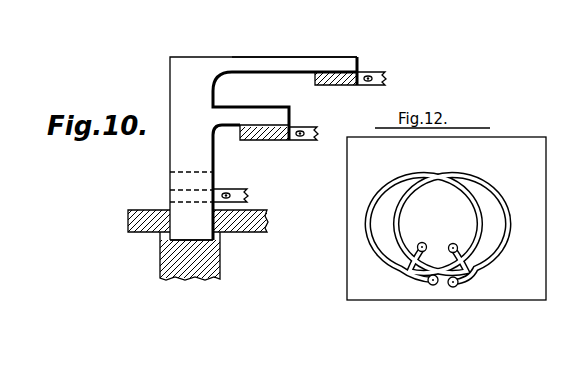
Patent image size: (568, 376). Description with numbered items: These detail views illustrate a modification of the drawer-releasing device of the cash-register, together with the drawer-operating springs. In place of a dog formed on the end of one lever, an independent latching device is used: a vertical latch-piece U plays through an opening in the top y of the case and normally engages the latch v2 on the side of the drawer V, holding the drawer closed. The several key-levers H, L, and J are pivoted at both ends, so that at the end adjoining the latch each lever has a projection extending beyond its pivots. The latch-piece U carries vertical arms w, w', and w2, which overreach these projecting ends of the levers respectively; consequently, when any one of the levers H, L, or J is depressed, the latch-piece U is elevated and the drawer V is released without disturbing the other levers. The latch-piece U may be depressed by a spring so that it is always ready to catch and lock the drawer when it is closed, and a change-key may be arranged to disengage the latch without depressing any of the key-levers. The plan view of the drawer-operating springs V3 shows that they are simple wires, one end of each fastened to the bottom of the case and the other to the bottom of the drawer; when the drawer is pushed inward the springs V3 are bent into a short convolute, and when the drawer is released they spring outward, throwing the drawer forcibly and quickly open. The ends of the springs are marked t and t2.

In FIG. 10, the vertical latch-piece U is at (200, 77).
In FIG. 10, the vertical arm of latch w is at (294, 51).
In FIG. 10, the vertical arm of latch w' is at (255, 106).
In FIG. 10, the vertical arm of latch w2 is at (215, 175).
In FIG. 10, the key-lever L is at (333, 86).
In FIG. 10, the key-lever J is at (271, 139).
In FIG. 10, the key-lever H is at (248, 193).
In FIG. 10, the top y is at (136, 209).
In FIG. 10, the drawer V is at (233, 262).
In FIG. 10, the latch on the drawer v2 is at (220, 238).
In FIG. 12, the drawer-operating springs V3 is at (390, 189).
In FIG. 12, the inner end of spring t2 is at (458, 247).
In FIG. 12, the outer end of spring t is at (459, 283).